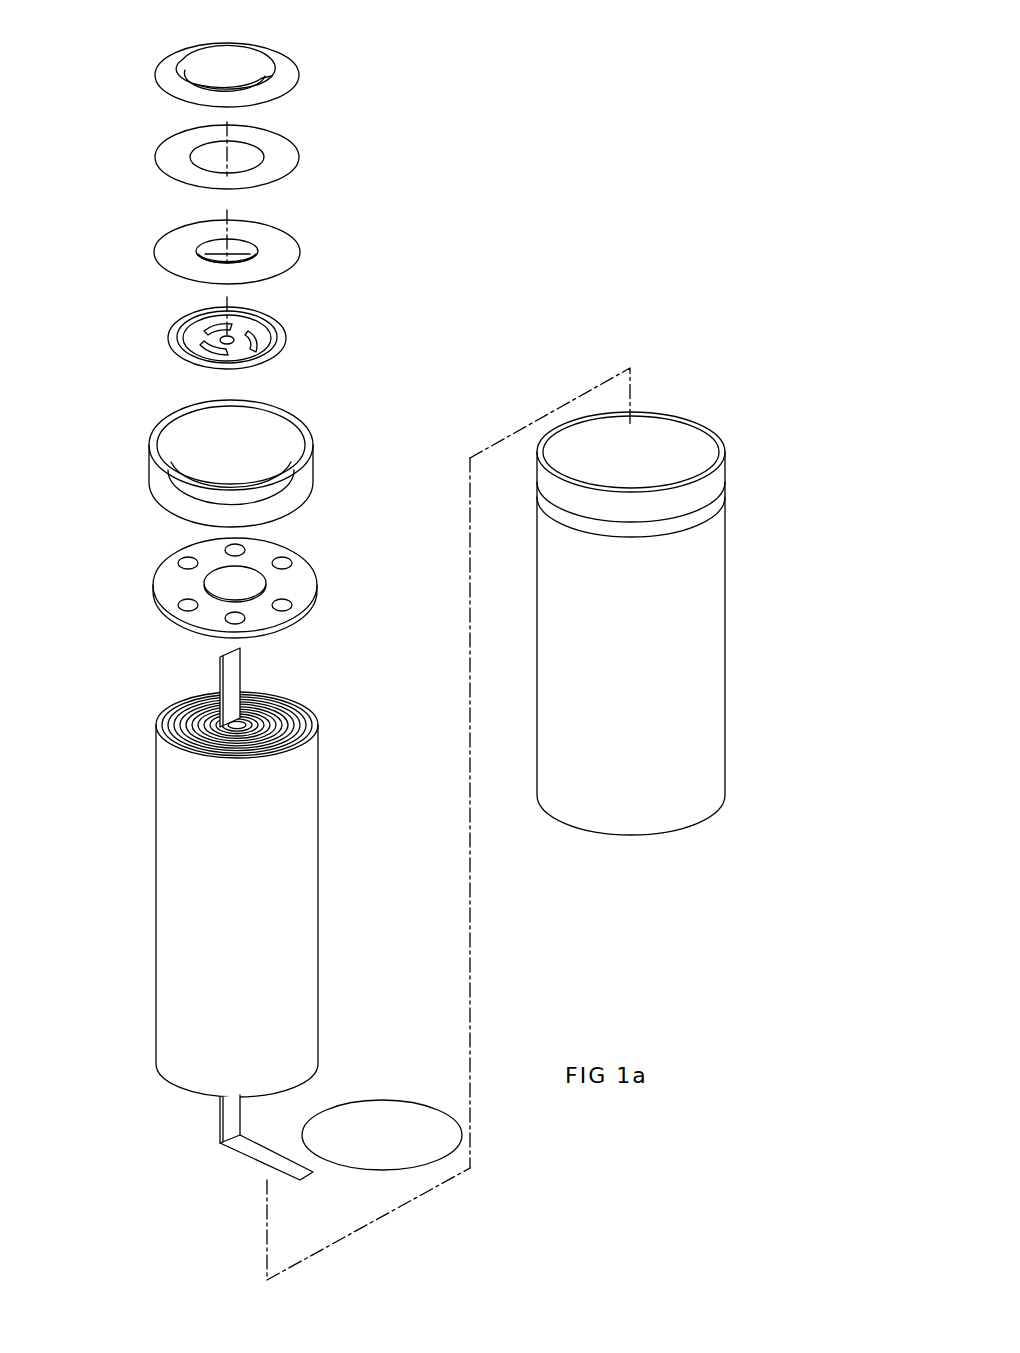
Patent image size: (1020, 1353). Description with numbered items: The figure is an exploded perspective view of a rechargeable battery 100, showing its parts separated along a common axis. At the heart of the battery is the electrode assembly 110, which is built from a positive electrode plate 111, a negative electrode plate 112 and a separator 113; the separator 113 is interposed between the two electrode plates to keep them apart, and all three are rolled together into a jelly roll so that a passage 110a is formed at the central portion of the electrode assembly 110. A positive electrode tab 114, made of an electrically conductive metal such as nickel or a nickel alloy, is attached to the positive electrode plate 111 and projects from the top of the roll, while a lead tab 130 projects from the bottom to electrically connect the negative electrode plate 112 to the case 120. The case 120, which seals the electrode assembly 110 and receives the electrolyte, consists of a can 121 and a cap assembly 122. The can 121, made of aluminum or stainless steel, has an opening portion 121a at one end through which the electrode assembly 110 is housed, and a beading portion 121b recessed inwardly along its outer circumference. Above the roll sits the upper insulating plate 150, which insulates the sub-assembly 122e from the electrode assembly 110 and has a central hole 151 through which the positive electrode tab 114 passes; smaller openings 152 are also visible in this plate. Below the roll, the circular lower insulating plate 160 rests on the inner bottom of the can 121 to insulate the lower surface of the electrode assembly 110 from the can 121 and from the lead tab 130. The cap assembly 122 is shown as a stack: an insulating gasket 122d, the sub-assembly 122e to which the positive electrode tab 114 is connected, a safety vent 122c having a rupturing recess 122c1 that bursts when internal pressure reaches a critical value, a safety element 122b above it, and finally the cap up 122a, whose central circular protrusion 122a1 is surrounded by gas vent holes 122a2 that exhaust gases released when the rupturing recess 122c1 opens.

The rechargeable battery 100 is at (606, 112).
The electrode assembly 110 is at (271, 872).
The passage 110a is at (182, 700).
The positive electrode plate 111 is at (303, 727).
The negative electrode plate 112 is at (297, 712).
The separator 113 is at (300, 717).
The positive electrode tab 114 is at (233, 665).
The case 120 is at (681, 325).
The can 121 is at (674, 578).
The opening portion 121a is at (688, 447).
The beading portion 121b is at (707, 513).
The cap assembly 122 is at (423, 57).
The cap up 122a is at (242, 56).
The circular protrusion 122a1 is at (199, 58).
The gas vent holes 122a2 is at (197, 85).
The safety element 122b is at (301, 142).
The safety vent 122c is at (235, 252).
The rupturing recess 122c1 is at (197, 254).
The insulating gasket 122d is at (320, 438).
The sub-assembly 122e is at (304, 325).
The lead tab 130 is at (230, 1118).
The upper insulating plate 150 is at (249, 571).
The hole 151 is at (247, 583).
The electrolyte holes 152 is at (190, 603).
The lower insulating plate 160 is at (380, 1098).